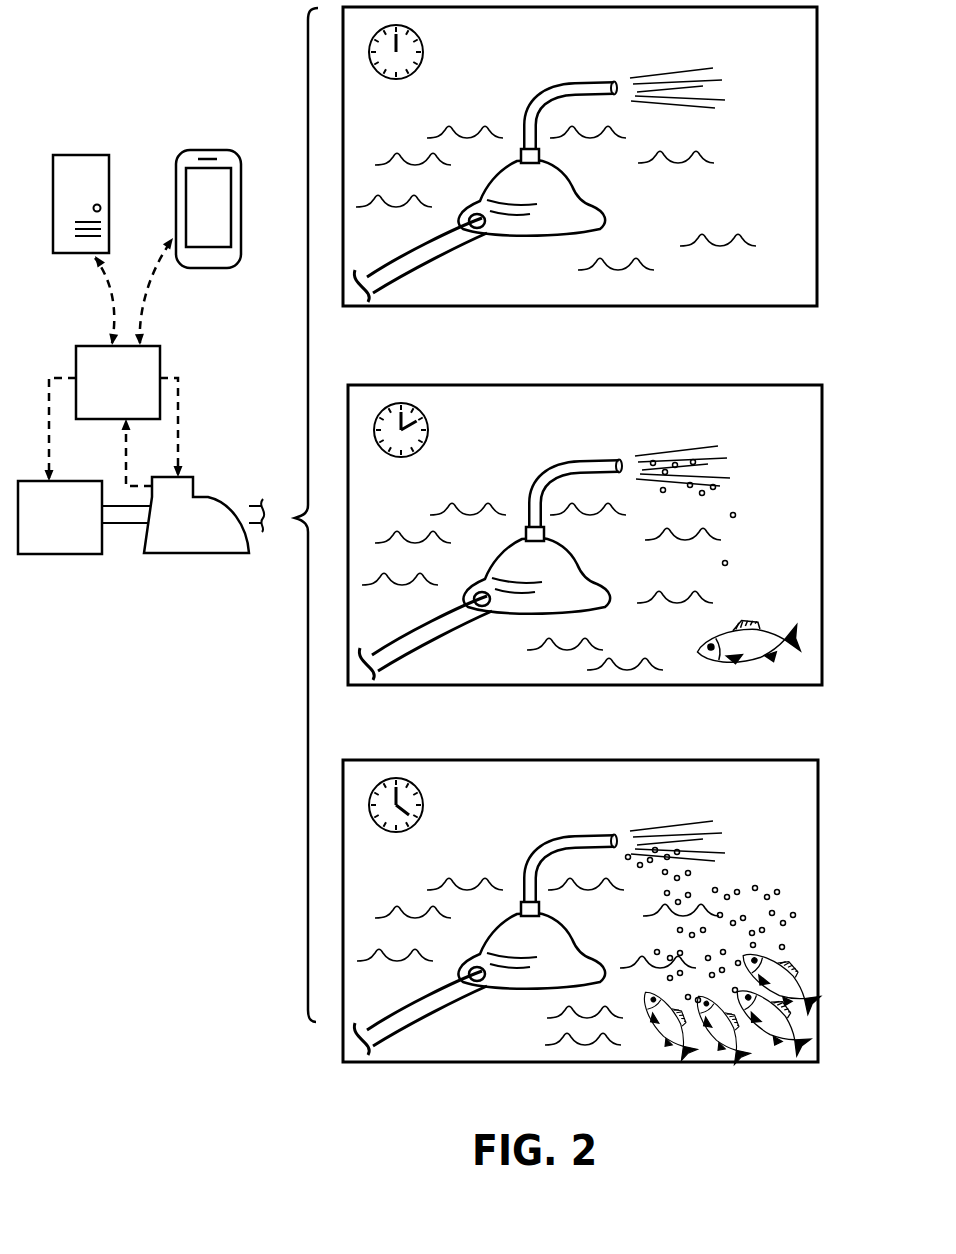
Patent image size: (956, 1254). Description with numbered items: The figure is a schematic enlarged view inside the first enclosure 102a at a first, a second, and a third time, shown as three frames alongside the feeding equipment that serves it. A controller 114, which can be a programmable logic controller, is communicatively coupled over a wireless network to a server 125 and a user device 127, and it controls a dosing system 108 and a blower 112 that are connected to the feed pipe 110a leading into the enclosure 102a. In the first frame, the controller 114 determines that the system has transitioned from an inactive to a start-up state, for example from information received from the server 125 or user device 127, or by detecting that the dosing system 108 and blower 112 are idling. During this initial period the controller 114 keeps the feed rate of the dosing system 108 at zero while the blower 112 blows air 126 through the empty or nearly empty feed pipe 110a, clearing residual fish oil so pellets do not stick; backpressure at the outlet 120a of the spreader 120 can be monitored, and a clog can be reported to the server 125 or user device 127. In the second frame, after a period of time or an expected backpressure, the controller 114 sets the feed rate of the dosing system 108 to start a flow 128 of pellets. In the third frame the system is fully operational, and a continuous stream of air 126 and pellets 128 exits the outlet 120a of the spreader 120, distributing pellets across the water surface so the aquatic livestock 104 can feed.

The first enclosure 102a is at (818, 79).
The aquatic livestock 104 is at (805, 1016).
The dosing system 108 is at (83, 536).
The feed pipe 110a is at (248, 505).
The blower 112 is at (213, 538).
The controller 114 is at (143, 400).
The spreader 120 is at (603, 221).
The outlet 120a is at (616, 84).
The server 125 is at (66, 155).
The air 126 is at (738, 73).
The user device 127 is at (191, 150).
The flow of pellets 128 is at (749, 542).